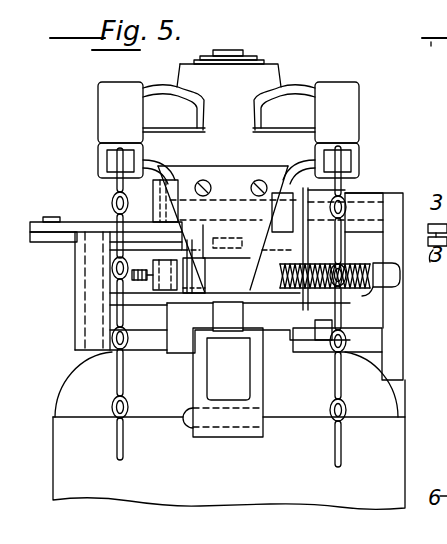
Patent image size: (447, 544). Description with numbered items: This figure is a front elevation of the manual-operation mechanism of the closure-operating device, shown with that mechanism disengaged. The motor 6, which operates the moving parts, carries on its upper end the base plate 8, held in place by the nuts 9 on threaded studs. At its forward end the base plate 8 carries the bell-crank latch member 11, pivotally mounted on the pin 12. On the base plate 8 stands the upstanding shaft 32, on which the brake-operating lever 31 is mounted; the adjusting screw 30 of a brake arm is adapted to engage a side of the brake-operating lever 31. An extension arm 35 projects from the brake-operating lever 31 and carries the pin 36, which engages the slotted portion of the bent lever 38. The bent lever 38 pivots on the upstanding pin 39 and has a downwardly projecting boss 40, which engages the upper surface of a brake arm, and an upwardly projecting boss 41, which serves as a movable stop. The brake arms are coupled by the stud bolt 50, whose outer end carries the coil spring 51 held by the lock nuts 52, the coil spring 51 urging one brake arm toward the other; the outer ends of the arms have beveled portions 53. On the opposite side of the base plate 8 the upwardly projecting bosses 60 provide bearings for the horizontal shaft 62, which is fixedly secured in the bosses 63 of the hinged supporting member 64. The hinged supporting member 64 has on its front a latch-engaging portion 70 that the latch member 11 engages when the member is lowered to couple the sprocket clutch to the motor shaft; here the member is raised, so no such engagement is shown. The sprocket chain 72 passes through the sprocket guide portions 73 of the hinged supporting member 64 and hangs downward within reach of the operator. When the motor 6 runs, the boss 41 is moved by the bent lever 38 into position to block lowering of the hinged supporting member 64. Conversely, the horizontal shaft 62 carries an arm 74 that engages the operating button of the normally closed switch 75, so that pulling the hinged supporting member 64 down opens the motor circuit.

The motor 6 is at (250, 500).
The base plate 8 is at (360, 350).
The nuts 9 is at (130, 316).
The latch member 11 is at (238, 326).
The pin 12 is at (226, 432).
The adjusting screw 30 is at (140, 280).
The brake-operating lever 31 is at (183, 238).
The upstanding shaft 32 is at (237, 54).
The extension arm 35 is at (42, 234).
The pin 36 is at (52, 217).
The bent lever 38 is at (78, 222).
The upstanding pin 39 is at (85, 310).
The downwardly projecting boss 40 is at (197, 246).
The upwardly projecting boss 41 is at (160, 204).
The stud bolt 50 is at (397, 284).
The coil spring 51 is at (322, 292).
The lock nuts 52 is at (392, 292).
The beveled portions 53 is at (300, 279).
The upwardly projecting bosses 60 is at (300, 242).
The horizontal shaft 62 is at (343, 249).
The bosses 63 is at (288, 180).
The hinged supporting member 64 is at (292, 96).
The latch-engaging portion 70 is at (233, 186).
The sprocket chain 72 is at (117, 440).
The sprocket guide portions 73 is at (110, 162).
The arm 74 is at (368, 265).
The switch 75 is at (394, 207).